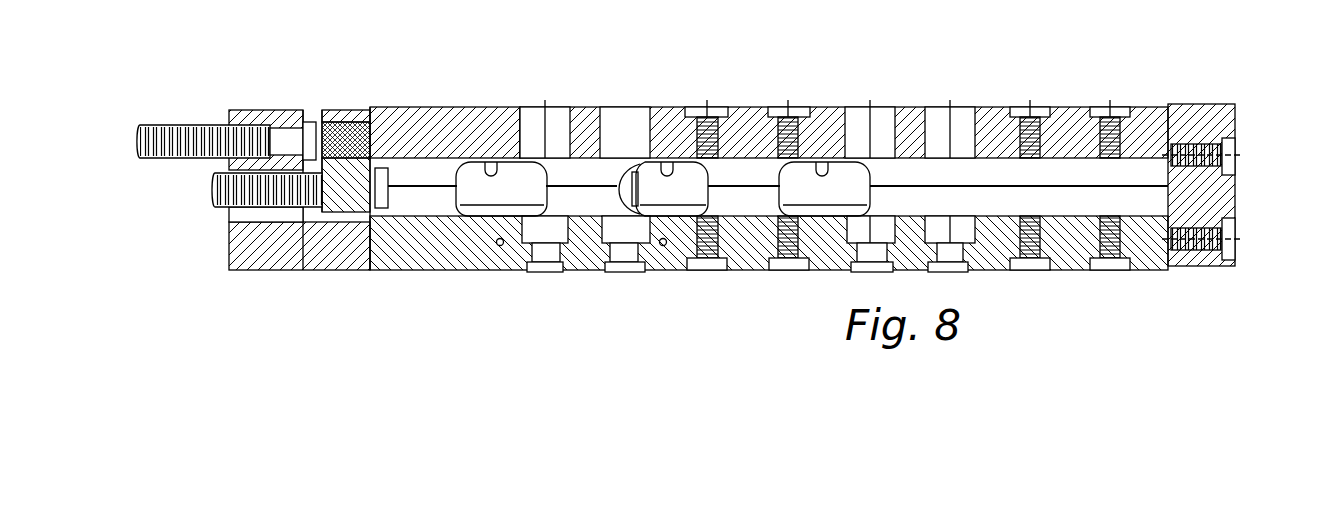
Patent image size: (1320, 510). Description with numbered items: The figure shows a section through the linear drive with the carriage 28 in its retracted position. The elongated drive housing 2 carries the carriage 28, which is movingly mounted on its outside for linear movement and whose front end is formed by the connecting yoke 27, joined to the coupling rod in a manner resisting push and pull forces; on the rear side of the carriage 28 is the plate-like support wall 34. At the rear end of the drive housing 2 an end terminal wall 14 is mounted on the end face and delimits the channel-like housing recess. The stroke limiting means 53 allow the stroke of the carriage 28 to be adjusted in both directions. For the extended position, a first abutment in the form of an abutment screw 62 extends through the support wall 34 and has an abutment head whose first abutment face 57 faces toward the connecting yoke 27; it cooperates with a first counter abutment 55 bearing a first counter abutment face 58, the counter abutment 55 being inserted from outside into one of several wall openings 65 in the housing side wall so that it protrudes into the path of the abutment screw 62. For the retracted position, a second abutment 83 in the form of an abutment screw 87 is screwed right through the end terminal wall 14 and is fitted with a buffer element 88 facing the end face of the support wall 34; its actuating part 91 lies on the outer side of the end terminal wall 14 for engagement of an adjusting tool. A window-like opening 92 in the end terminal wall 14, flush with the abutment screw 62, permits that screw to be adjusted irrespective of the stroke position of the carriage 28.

The drive housing 2 is at (422, 258).
The end terminal wall 14 is at (303, 262).
The connecting yoke 27 is at (1215, 200).
The carriage 28 is at (986, 113).
The support wall 34 is at (345, 195).
The stroke limiting means 53 is at (376, 110).
The first counter abutment 55 is at (673, 205).
The first abutment face 57 is at (395, 180).
The first counter abutment face 58 is at (630, 176).
The abutment screw 62 is at (230, 192).
The wall openings 65 is at (491, 168).
The second abutment 83 is at (226, 99).
The abutment screw 87 is at (192, 125).
The buffer element 88 is at (338, 135).
The actuating part 91 is at (160, 155).
The window-like opening 92 is at (265, 215).